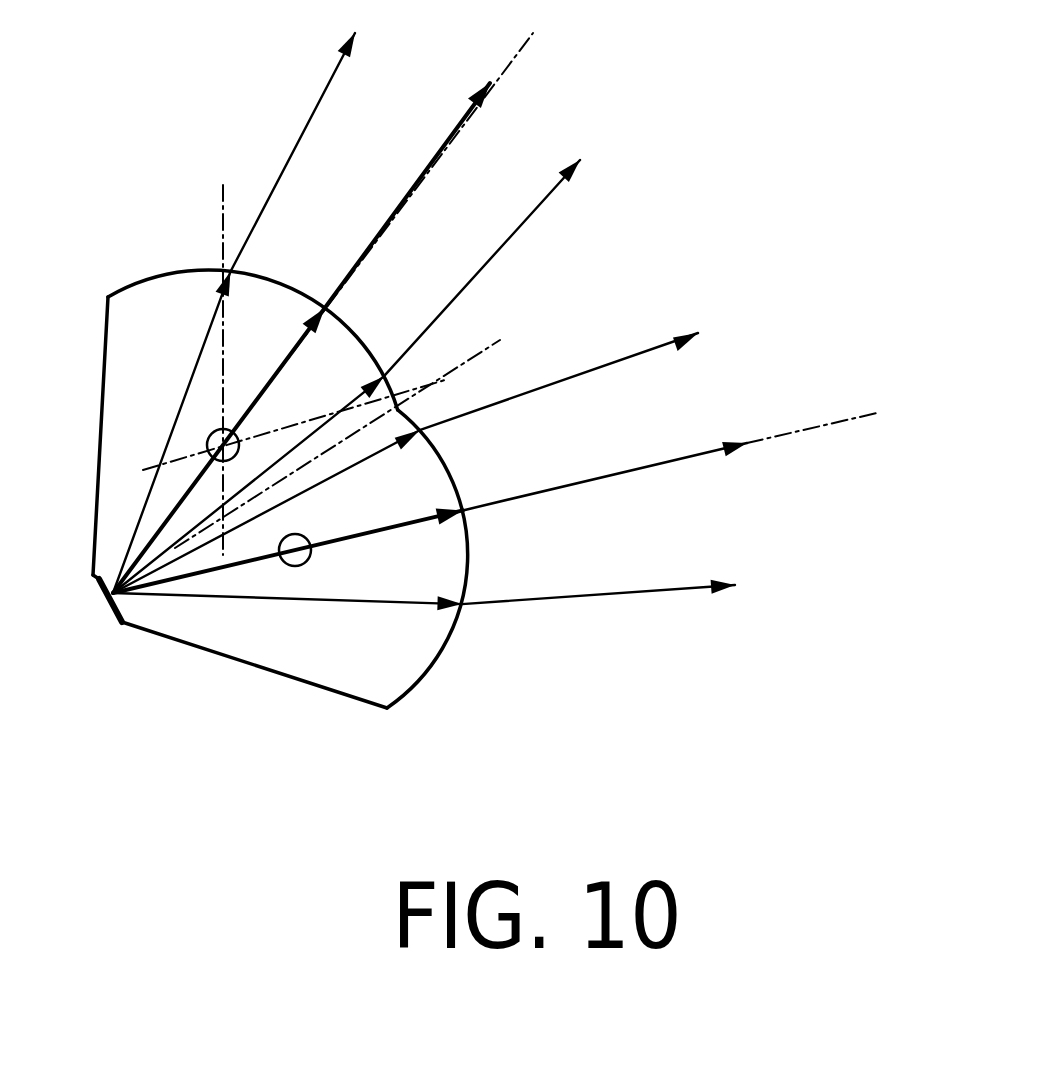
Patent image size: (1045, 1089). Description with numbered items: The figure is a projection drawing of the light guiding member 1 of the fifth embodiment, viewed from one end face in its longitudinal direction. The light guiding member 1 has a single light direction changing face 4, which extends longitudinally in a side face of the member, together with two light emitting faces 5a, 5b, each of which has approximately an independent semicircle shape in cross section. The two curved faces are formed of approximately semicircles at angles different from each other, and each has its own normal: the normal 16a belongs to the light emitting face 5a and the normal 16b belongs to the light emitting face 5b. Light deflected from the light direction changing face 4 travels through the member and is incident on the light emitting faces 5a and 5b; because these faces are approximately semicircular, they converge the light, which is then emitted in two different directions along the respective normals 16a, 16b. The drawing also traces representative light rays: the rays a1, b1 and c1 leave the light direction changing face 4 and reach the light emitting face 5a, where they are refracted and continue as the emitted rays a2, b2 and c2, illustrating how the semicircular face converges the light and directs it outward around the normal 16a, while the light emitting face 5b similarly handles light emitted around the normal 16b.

The light guiding member 1 is at (330, 518).
The light direction changing face 4 is at (90, 583).
The light emitting face 5a is at (360, 330).
The light emitting face 5b is at (452, 468).
The normal of the light emitting face 5a 16a is at (540, 62).
The normal of the light emitting face 5b 16b is at (845, 452).
The incident light ray a a1 is at (273, 373).
The emitted light ray a a2 is at (437, 148).
The incident light ray b b1 is at (192, 365).
The emitted light ray b b2 is at (318, 92).
The incident light ray c c1 is at (312, 432).
The emitted light ray c c2 is at (537, 217).